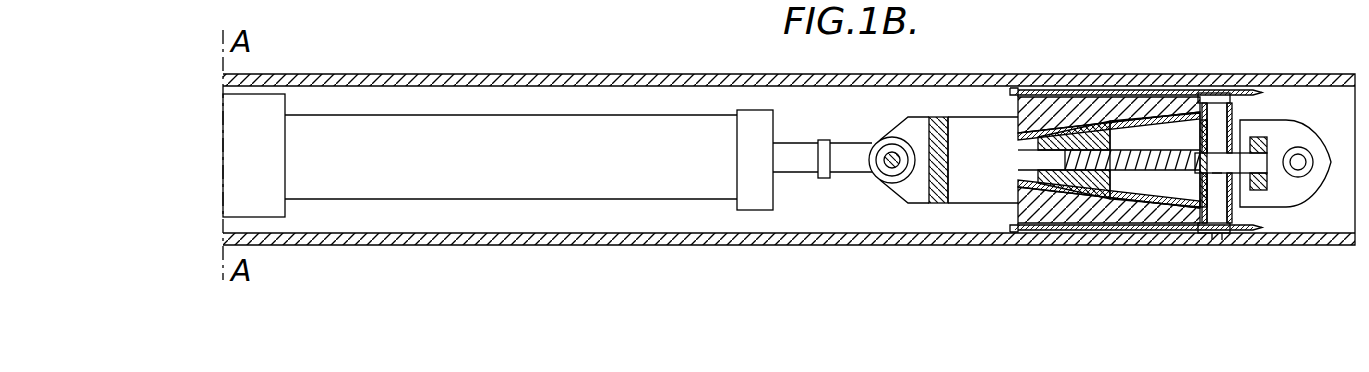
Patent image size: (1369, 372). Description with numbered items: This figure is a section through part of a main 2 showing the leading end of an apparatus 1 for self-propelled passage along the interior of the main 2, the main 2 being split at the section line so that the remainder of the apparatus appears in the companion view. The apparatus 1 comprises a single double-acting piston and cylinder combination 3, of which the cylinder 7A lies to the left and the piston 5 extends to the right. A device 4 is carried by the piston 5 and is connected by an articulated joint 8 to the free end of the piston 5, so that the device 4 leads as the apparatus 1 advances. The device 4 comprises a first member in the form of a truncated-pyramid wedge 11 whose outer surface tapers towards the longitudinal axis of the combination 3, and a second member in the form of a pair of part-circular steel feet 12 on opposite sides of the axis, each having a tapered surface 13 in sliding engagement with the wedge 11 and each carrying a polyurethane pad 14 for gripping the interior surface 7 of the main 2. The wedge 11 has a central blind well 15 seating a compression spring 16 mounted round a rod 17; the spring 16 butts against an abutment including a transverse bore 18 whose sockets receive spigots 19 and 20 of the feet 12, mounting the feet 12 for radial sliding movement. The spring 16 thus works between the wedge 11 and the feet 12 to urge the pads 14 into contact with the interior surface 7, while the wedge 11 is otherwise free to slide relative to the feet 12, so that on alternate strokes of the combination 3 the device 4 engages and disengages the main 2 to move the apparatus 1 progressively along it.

The apparatus 1 is at (675, 110).
The main 2 is at (1104, 77).
The double-acting piston and cylinder combination 3 is at (356, 168).
The device 4 is at (1160, 136).
The piston 5 is at (782, 150).
The interior surface 7 is at (1280, 95).
The cylinder 7A is at (606, 185).
The articulated joint 8 is at (888, 152).
The wedge 11 is at (1037, 177).
The feet 12 is at (1025, 104).
The tapered surface 13 is at (1133, 124).
The polyurethane pad 14 is at (1067, 89).
The central blind well 15 is at (1037, 148).
The compression spring 16 is at (1173, 194).
The rod 17 is at (1237, 160).
The transverse bore 18 is at (1230, 178).
The spigot 19 is at (1215, 118).
The spigot 20 is at (1223, 205).